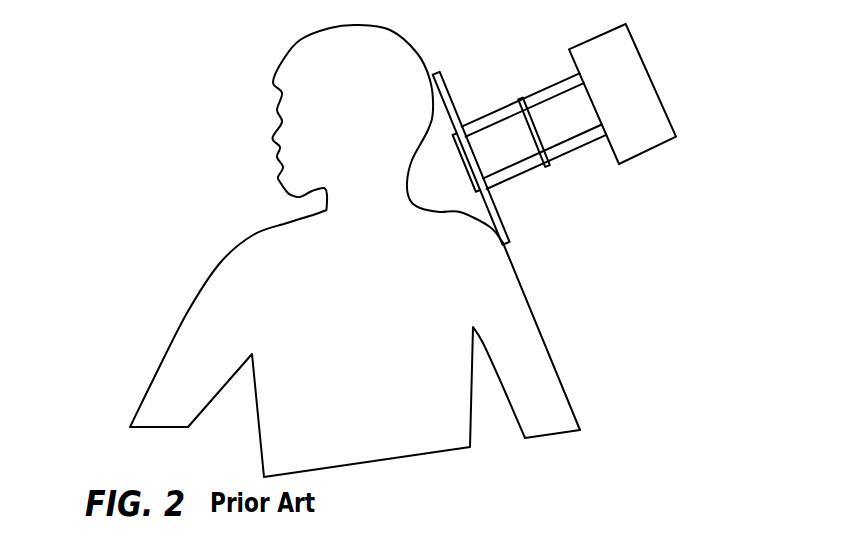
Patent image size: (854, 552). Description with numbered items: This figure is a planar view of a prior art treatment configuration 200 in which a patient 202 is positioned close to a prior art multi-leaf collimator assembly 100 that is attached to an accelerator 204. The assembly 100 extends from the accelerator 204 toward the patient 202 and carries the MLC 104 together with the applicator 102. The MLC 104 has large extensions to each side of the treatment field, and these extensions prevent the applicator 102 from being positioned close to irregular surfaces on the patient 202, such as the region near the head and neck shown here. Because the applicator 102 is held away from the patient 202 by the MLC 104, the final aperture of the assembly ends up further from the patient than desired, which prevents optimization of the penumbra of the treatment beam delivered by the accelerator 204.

The multi-leaf collimator assembly 100 is at (572, 126).
The applicator 102 is at (548, 160).
The MLC 104 is at (510, 233).
The treatment configuration 200 is at (123, 58).
The patient 202 is at (545, 330).
The accelerator 204 is at (650, 152).